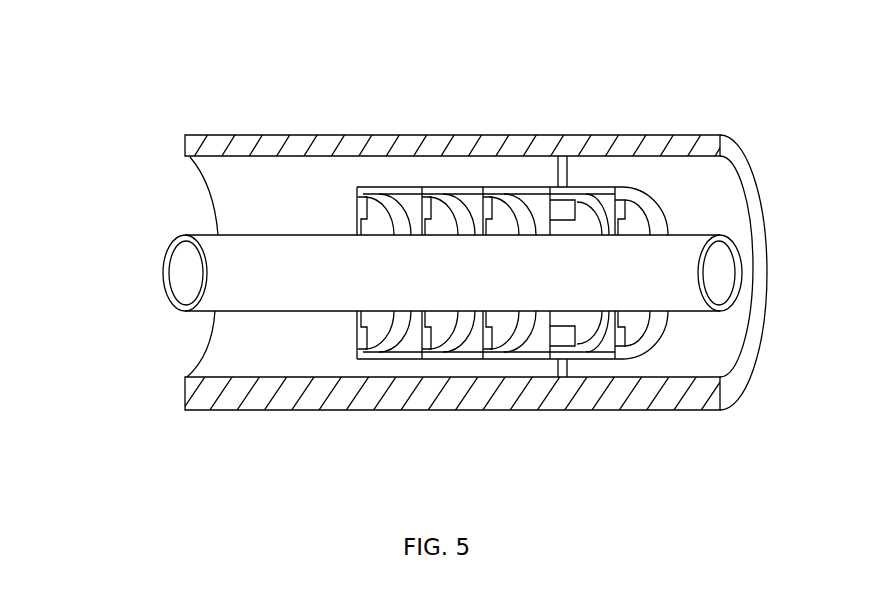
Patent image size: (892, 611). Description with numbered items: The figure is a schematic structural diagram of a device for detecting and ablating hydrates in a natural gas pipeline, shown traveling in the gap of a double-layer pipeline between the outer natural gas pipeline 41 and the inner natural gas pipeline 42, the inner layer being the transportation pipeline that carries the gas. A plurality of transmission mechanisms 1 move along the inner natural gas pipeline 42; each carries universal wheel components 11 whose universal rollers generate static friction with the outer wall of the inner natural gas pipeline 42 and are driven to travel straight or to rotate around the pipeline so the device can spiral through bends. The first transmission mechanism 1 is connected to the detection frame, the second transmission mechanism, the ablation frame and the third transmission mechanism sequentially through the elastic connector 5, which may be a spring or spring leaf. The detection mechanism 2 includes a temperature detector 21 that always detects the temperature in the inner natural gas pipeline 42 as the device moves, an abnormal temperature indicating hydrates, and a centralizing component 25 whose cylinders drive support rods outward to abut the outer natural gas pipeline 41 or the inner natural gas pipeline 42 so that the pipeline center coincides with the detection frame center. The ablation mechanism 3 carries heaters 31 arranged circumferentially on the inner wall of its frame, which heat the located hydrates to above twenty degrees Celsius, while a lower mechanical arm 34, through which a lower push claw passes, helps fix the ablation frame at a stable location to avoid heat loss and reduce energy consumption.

The transmission mechanism 1 is at (371, 191).
The universal wheel component 11 is at (357, 207).
The detection mechanism 2 is at (458, 235).
The temperature detector 21 is at (428, 200).
The centralizing component 25 is at (422, 313).
The ablation mechanism 3 is at (551, 200).
The heater 31 is at (548, 220).
The lower mechanical arm 34 is at (558, 365).
The outer natural gas pipeline 41 is at (187, 136).
The inner natural gas pipeline 42 is at (183, 233).
The elastic connector 5 is at (599, 187).